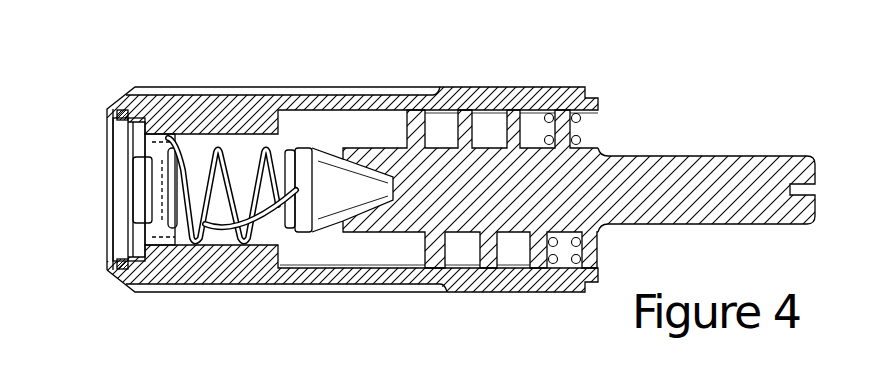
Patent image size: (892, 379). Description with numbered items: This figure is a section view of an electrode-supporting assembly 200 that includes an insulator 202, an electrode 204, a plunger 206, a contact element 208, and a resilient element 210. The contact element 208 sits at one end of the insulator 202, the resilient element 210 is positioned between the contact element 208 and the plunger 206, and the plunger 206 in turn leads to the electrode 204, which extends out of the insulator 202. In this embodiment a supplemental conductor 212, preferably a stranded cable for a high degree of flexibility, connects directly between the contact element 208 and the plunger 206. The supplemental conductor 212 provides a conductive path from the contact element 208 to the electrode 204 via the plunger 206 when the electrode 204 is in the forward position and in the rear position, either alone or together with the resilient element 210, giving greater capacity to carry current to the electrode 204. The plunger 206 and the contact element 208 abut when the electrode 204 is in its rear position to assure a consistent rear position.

The electrode-supporting assembly 200 is at (425, 173).
The insulator 202 is at (470, 92).
The electrode 204 is at (755, 167).
The plunger 206 is at (323, 170).
The contact element 208 is at (152, 182).
The resilient element 210 is at (218, 152).
The supplemental conductor 212 is at (227, 222).